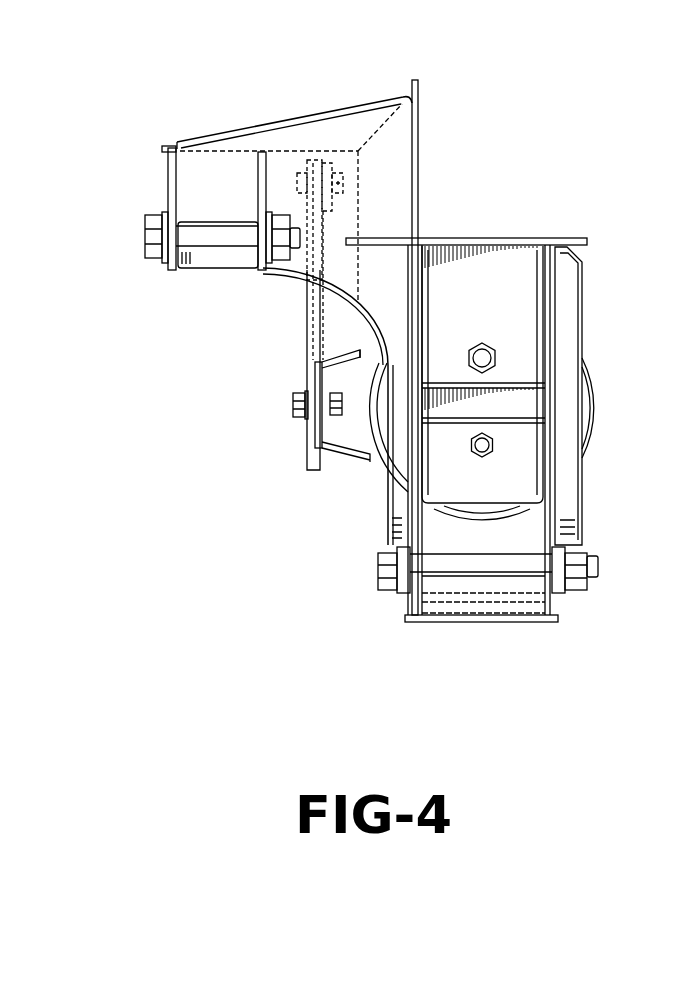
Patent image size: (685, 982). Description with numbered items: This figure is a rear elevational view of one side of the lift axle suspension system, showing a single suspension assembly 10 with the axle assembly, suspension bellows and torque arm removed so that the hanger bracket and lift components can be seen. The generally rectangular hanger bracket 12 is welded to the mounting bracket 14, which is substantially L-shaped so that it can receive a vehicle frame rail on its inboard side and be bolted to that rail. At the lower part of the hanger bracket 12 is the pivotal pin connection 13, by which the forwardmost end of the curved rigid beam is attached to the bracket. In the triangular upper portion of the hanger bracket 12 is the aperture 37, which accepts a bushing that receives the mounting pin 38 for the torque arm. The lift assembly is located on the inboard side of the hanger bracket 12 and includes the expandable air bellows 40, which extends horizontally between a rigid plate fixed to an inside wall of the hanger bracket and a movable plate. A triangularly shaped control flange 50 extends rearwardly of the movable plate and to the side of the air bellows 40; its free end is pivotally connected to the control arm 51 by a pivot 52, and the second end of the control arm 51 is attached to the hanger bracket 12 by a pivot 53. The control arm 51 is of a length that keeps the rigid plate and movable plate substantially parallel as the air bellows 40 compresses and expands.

The suspension assembly 10 is at (566, 203).
The hanger bracket 12 is at (522, 307).
The pivotal pin connection 13 is at (380, 565).
The mounting bracket 14 is at (418, 121).
The aperture 37 is at (178, 225).
The mounting pin 38 is at (146, 236).
The air bellows 40 is at (592, 400).
The control flange 50 is at (315, 442).
The control arm 51 is at (307, 308).
The pivot 52 is at (294, 402).
The pivot 53 is at (343, 183).